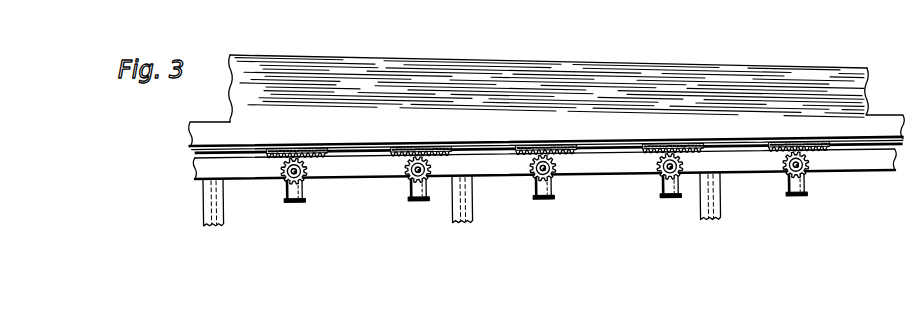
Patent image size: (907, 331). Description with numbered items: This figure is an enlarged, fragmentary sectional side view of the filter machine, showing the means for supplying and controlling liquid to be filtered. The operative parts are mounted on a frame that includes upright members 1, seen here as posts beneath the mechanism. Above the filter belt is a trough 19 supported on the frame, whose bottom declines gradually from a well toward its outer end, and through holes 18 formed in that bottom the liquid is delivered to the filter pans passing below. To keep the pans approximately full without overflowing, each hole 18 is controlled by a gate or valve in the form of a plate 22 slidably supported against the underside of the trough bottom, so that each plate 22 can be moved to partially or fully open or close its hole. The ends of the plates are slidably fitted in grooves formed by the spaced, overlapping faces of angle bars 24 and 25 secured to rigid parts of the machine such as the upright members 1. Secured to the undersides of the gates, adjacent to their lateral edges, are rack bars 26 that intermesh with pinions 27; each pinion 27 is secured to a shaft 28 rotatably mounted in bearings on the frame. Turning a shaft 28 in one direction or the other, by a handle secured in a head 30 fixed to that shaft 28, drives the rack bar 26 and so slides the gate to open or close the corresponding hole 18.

The upright member 1 is at (224, 203).
The hole 18 is at (248, 145).
The trough 19 is at (558, 84).
The plate 22 is at (272, 150).
The angle bar 24 is at (213, 128).
The angle bar 25 is at (603, 172).
The rack bar 26 is at (273, 159).
The pinion 27 is at (287, 181).
The shaft 28 is at (308, 172).
The head 30 is at (303, 193).